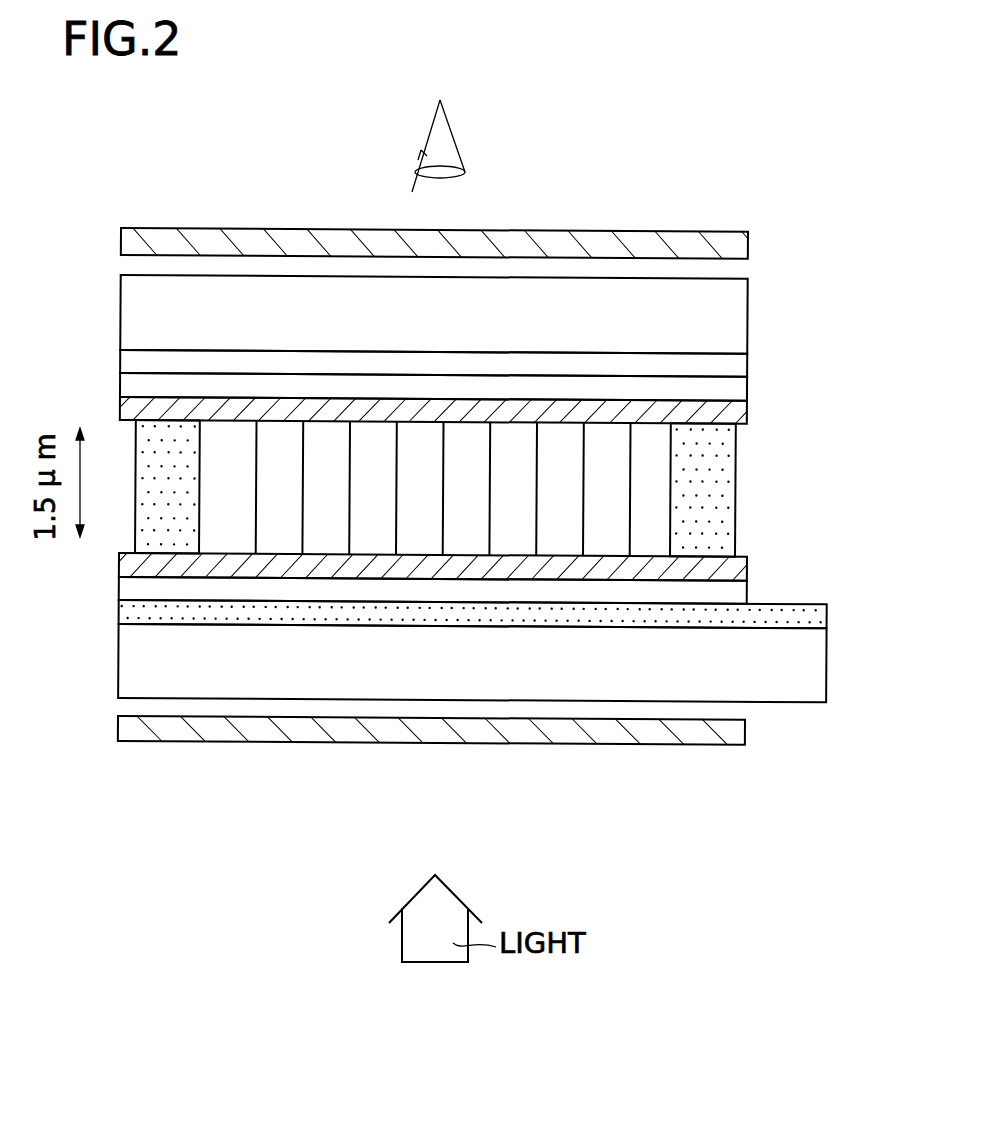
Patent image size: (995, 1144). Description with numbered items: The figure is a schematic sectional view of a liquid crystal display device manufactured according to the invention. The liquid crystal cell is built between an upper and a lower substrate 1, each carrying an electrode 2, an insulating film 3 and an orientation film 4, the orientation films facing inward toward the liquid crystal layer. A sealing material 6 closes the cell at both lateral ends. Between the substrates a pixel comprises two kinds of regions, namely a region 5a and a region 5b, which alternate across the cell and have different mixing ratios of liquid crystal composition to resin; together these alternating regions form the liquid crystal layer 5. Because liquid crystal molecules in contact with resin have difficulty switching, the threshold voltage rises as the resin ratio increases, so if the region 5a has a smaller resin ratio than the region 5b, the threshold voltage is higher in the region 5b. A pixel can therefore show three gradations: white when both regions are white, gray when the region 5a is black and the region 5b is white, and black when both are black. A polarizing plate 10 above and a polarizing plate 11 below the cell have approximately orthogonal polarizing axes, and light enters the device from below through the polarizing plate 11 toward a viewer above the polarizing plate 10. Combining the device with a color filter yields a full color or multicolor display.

The substrate 1 is at (733, 310).
The electrode 2 is at (733, 367).
The insulating film 3 is at (740, 392).
The orientation film 4 is at (737, 410).
The color filter 5 is at (435, 639).
The region with different ratio of liquid crystal composition to resin 5a is at (228, 540).
The region with different ratio of liquid crystal composition to resin 5b is at (275, 540).
The sealing material 6 is at (728, 480).
The polarizing plate 10 is at (560, 228).
The polarizing plate 11 is at (760, 733).